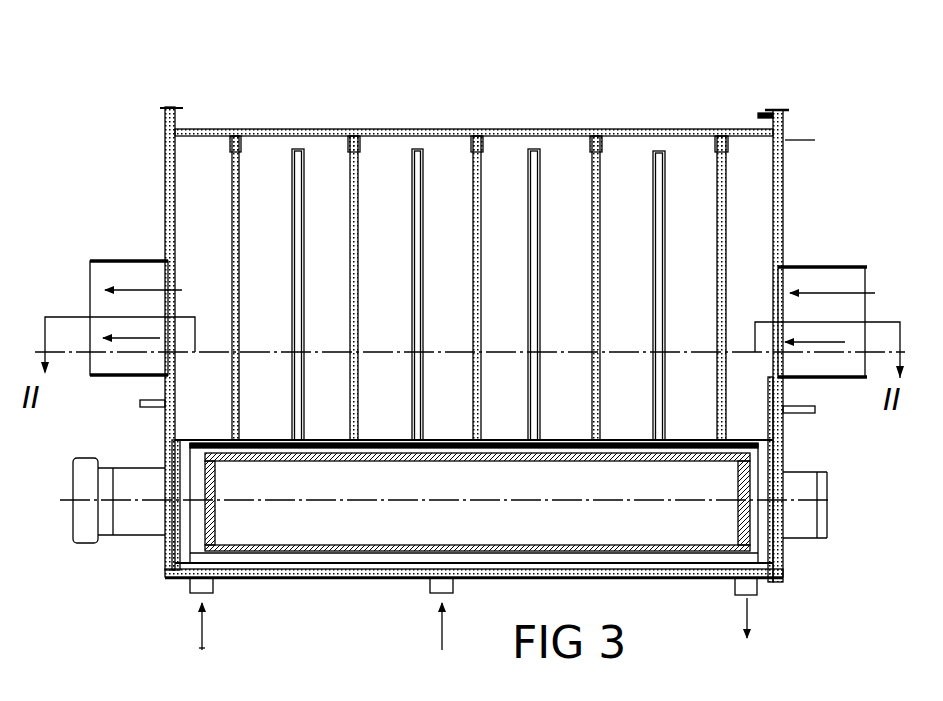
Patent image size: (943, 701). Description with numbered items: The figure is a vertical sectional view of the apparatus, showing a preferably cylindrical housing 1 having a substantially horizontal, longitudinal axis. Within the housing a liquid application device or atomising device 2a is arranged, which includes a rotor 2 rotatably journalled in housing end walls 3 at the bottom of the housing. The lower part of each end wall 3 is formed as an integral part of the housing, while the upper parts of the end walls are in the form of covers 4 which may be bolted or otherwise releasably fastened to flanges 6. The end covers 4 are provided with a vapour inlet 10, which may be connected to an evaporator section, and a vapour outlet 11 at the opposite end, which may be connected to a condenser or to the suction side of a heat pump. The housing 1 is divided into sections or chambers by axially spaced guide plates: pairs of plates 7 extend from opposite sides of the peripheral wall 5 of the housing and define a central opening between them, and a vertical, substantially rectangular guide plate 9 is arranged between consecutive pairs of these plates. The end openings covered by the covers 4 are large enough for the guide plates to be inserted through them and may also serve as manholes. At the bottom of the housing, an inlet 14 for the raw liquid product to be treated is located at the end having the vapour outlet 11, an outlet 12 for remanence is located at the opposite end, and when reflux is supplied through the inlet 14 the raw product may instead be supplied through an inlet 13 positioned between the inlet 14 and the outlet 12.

The housing 1 is at (445, 110).
The rotor 2 is at (293, 578).
The liquid application device or atomising device 2a is at (390, 500).
The housing end wall 3 is at (785, 418).
The cover 4 is at (783, 162).
The peripheral wall 5 is at (705, 131).
The flange 6 is at (760, 111).
The guide plate 7 is at (640, 172).
The vertical rectangular guide plate 9 is at (237, 213).
The vapour inlet 10 is at (812, 268).
The vapour outlet 11 is at (132, 262).
The outlet for remanence 12 is at (735, 596).
The inlet 13 is at (430, 597).
The inlet for raw liquid product 14 is at (169, 614).